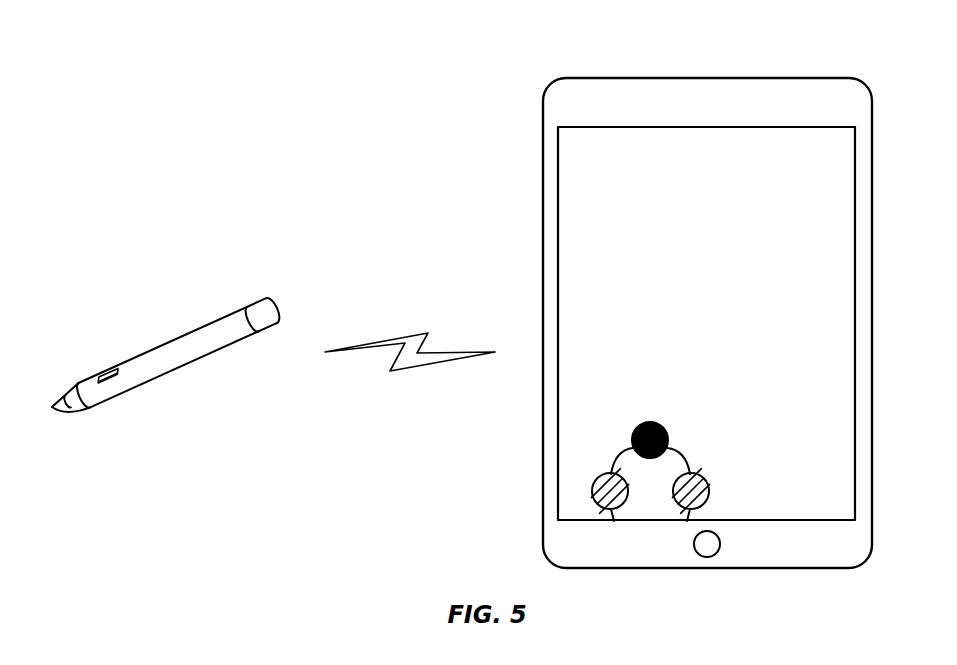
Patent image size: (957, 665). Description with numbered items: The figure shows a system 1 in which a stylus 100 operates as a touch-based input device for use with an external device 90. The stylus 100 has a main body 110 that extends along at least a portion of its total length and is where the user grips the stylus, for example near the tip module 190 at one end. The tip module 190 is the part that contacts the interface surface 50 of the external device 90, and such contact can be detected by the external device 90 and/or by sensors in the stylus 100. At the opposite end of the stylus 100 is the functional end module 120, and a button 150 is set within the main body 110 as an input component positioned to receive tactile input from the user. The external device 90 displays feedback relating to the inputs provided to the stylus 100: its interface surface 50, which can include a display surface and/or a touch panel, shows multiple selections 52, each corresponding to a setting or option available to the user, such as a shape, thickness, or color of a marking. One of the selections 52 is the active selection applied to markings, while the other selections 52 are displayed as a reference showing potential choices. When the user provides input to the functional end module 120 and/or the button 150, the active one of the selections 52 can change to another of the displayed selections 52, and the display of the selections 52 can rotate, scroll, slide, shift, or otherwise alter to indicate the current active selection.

The system 1 is at (401, 118).
The stylus 100 is at (146, 328).
The main body 110 is at (188, 365).
The functional end module 120 is at (260, 331).
The button 150 is at (110, 383).
The tip module 190 is at (52, 412).
The external device 90 is at (634, 77).
The interface surface 50 is at (768, 126).
The selections 52 is at (651, 422).